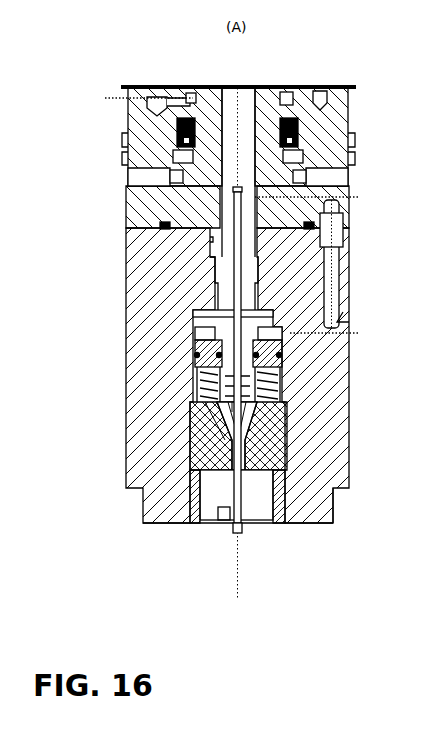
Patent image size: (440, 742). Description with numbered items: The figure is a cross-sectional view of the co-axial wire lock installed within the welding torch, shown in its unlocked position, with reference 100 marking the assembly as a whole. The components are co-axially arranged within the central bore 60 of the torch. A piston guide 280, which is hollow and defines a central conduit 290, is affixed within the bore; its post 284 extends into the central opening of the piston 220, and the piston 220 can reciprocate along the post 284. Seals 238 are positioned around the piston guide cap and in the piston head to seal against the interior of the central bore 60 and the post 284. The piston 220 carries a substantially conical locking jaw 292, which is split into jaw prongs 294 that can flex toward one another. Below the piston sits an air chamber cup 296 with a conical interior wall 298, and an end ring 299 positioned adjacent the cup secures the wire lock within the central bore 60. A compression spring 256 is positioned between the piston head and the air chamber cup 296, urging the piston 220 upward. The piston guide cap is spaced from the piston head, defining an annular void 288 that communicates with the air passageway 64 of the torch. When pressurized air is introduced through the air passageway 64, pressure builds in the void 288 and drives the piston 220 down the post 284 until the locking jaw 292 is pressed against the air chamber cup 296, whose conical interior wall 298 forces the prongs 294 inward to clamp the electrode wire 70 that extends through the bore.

The dispensing device 100 is at (123, 262).
The central bore 60 is at (280, 381).
The air passageways 64 is at (343, 312).
The electrode wire 70 is at (235, 530).
The piston 220 is at (198, 424).
The seal 238 is at (190, 330).
The compression spring 256 is at (287, 402).
The piston guide 280 is at (188, 333).
The post 284 is at (300, 348).
The annular void 288 is at (307, 280).
The central conduit 290 is at (187, 463).
The locking jaw 292 is at (140, 410).
The jaw prongs 294 is at (153, 527).
The air chamber cup 296 is at (295, 435).
The conical interior wall 298 is at (325, 498).
The end ring 299 is at (271, 521).